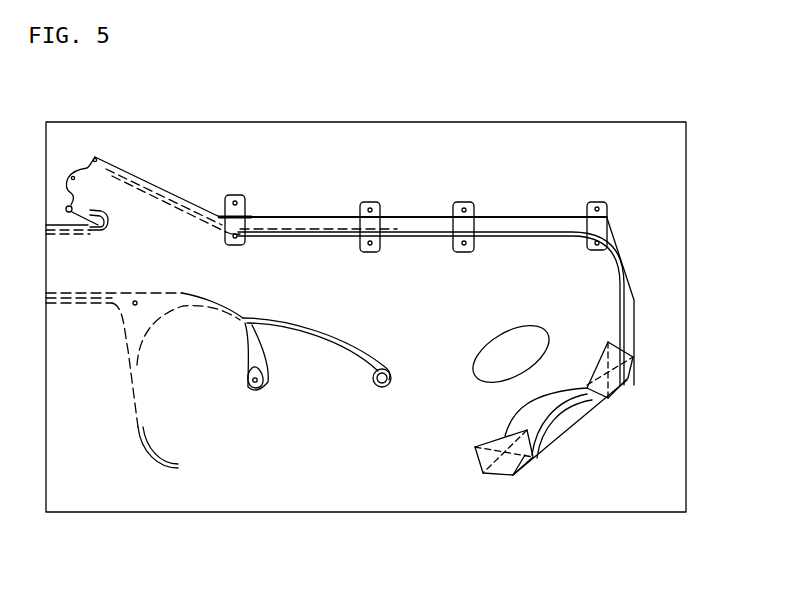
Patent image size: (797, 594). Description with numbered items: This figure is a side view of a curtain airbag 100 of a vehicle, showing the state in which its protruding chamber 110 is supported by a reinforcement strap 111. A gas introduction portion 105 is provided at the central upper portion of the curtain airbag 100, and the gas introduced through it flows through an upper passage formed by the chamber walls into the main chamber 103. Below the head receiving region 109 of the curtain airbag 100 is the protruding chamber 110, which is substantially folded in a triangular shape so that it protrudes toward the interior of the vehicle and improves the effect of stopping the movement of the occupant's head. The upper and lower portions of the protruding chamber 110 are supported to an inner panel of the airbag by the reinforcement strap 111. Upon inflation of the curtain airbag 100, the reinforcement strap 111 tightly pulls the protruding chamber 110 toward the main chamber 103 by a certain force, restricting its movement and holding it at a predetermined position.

The curtain airbag 100 is at (315, 200).
The main chamber 103 is at (407, 270).
The gas introduction portion 105 is at (128, 165).
The head receiving region 109 is at (538, 331).
The protruding chamber 110 is at (557, 423).
The reinforcement strap 111 is at (530, 400).